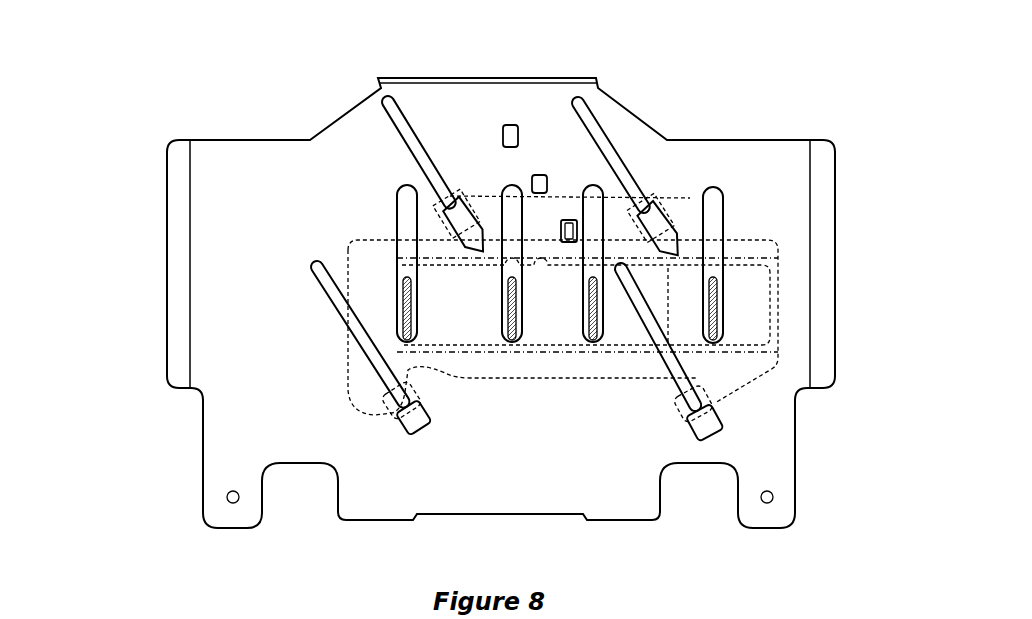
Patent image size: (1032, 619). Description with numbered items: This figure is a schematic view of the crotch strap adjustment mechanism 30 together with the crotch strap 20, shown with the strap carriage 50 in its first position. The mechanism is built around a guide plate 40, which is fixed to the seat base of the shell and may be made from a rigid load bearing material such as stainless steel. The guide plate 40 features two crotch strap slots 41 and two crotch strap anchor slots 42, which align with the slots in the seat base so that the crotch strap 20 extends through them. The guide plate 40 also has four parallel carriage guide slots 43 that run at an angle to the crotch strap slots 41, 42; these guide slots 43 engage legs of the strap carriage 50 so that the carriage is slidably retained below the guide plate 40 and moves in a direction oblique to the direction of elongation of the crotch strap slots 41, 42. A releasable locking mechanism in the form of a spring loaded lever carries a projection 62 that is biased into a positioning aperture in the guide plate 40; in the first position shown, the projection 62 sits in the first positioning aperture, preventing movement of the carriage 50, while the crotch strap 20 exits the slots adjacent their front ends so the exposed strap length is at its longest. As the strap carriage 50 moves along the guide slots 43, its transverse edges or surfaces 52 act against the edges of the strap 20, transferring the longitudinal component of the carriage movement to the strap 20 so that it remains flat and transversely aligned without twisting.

The crotch strap 20 is at (401, 302).
The crotch strap adjustment mechanism 30 is at (790, 93).
The guide plate 40 is at (146, 131).
The crotch strap slots 41 is at (405, 190).
The crotch strap anchor slots 42 is at (506, 185).
The carriage guide slots 43 is at (387, 100).
The strap carriage 50 is at (777, 253).
The transverse edges or surfaces 52 is at (767, 275).
The projection 62 is at (560, 218).